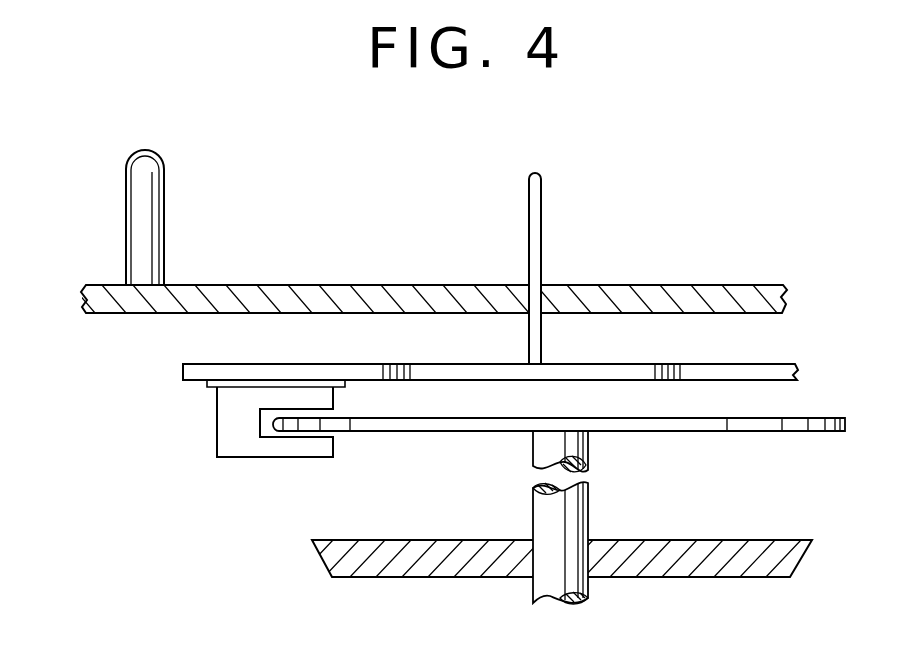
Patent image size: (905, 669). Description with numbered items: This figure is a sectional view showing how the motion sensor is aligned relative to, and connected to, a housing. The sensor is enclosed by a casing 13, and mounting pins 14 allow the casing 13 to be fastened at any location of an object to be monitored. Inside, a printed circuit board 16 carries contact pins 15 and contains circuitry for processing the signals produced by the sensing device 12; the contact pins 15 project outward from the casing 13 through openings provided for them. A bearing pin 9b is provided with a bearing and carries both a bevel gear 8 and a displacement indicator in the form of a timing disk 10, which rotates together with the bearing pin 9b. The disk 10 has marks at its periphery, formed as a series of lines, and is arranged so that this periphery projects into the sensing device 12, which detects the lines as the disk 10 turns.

The bevel gear 8 is at (698, 560).
The bearing pin 9b is at (577, 512).
The displacement indicator 10 is at (757, 422).
The sensing device 12 is at (228, 445).
The casing 13 is at (108, 303).
The mounting pins 14 is at (138, 220).
The contact pins 15 is at (537, 201).
The printed circuit board 16 is at (777, 372).